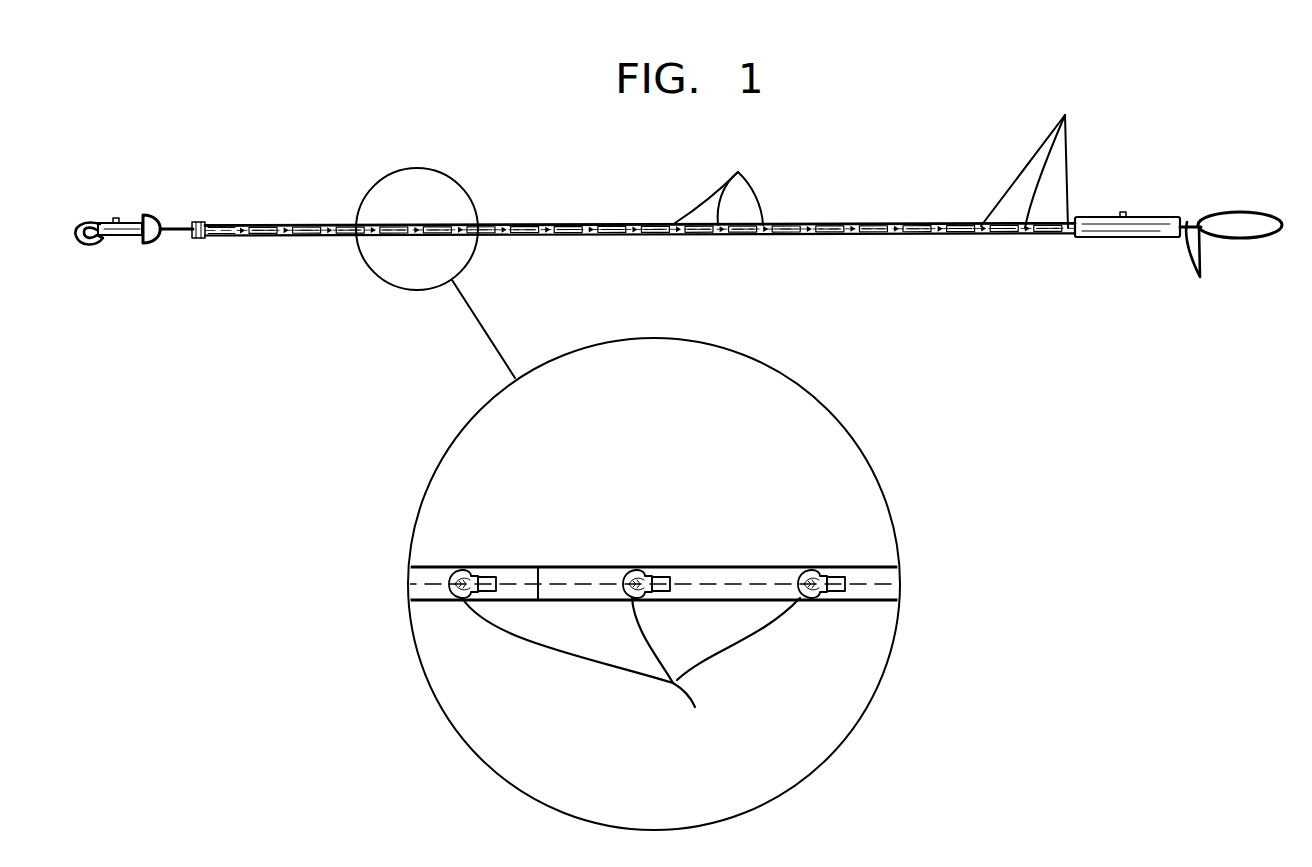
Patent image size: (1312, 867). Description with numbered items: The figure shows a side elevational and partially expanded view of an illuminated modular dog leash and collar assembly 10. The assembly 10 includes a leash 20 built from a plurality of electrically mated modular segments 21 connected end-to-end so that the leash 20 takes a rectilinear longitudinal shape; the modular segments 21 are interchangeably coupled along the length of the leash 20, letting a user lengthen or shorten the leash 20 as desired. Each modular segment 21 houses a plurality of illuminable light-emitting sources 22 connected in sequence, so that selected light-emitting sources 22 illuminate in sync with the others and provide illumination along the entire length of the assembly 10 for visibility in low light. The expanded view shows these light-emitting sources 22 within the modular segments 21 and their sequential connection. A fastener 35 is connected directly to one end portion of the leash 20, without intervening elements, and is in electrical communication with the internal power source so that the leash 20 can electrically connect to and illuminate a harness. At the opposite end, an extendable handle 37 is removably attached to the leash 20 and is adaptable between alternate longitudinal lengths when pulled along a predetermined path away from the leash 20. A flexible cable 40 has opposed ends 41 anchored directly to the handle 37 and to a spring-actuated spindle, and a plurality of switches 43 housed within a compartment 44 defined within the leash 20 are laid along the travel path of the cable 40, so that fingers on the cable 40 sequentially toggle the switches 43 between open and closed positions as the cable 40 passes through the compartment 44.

The assembly 10 is at (1013, 83).
The leash 20 is at (257, 226).
The modular segments 21 is at (312, 227).
The light-emitting sources 22 is at (738, 172).
The fastener 35 is at (110, 240).
The extendable handle 37 is at (1256, 240).
The flexible cable 40 is at (1190, 222).
The opposed ends 41 is at (1201, 278).
The switches 43 is at (1123, 212).
The compartment 44 is at (1106, 238).